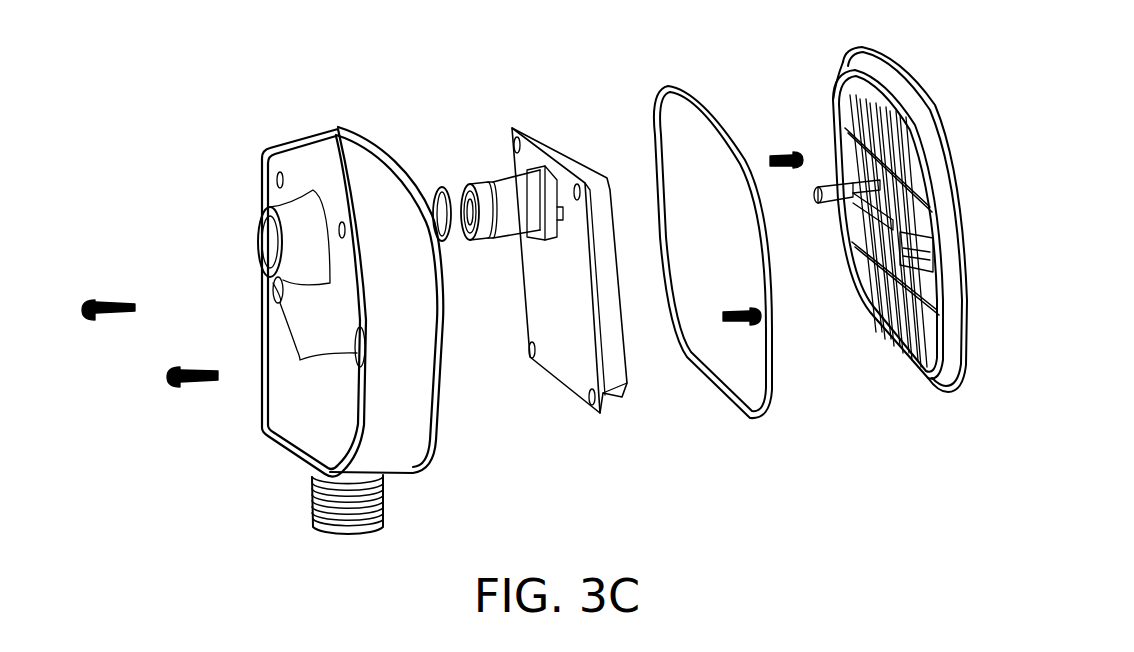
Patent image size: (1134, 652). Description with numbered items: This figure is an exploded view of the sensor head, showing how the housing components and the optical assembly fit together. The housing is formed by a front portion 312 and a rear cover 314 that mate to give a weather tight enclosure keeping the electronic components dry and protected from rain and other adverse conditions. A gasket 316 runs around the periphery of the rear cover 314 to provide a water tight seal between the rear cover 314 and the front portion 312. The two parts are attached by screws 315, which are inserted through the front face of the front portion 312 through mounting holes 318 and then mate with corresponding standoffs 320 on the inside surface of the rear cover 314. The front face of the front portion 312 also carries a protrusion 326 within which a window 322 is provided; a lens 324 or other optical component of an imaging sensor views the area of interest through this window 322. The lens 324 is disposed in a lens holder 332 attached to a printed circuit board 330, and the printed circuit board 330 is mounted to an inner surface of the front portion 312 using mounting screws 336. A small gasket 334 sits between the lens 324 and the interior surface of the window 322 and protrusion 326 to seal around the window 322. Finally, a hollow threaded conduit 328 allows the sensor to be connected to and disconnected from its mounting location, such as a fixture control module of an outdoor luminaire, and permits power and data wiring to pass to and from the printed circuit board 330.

The front portion 312 is at (287, 415).
The rear cover 314 is at (900, 350).
The screws 315 is at (190, 367).
The gasket 316 is at (708, 107).
The mounting holes 318 is at (300, 360).
The standoffs 320 is at (835, 205).
The window 322 is at (268, 240).
The lens 324 is at (465, 187).
The protrusion 326 is at (292, 212).
The threaded conduit 328 is at (312, 492).
The printed circuit board 330 is at (557, 363).
The lens holder 332 is at (508, 193).
The small gasket 334 is at (437, 190).
The mounting screws 336 is at (780, 150).